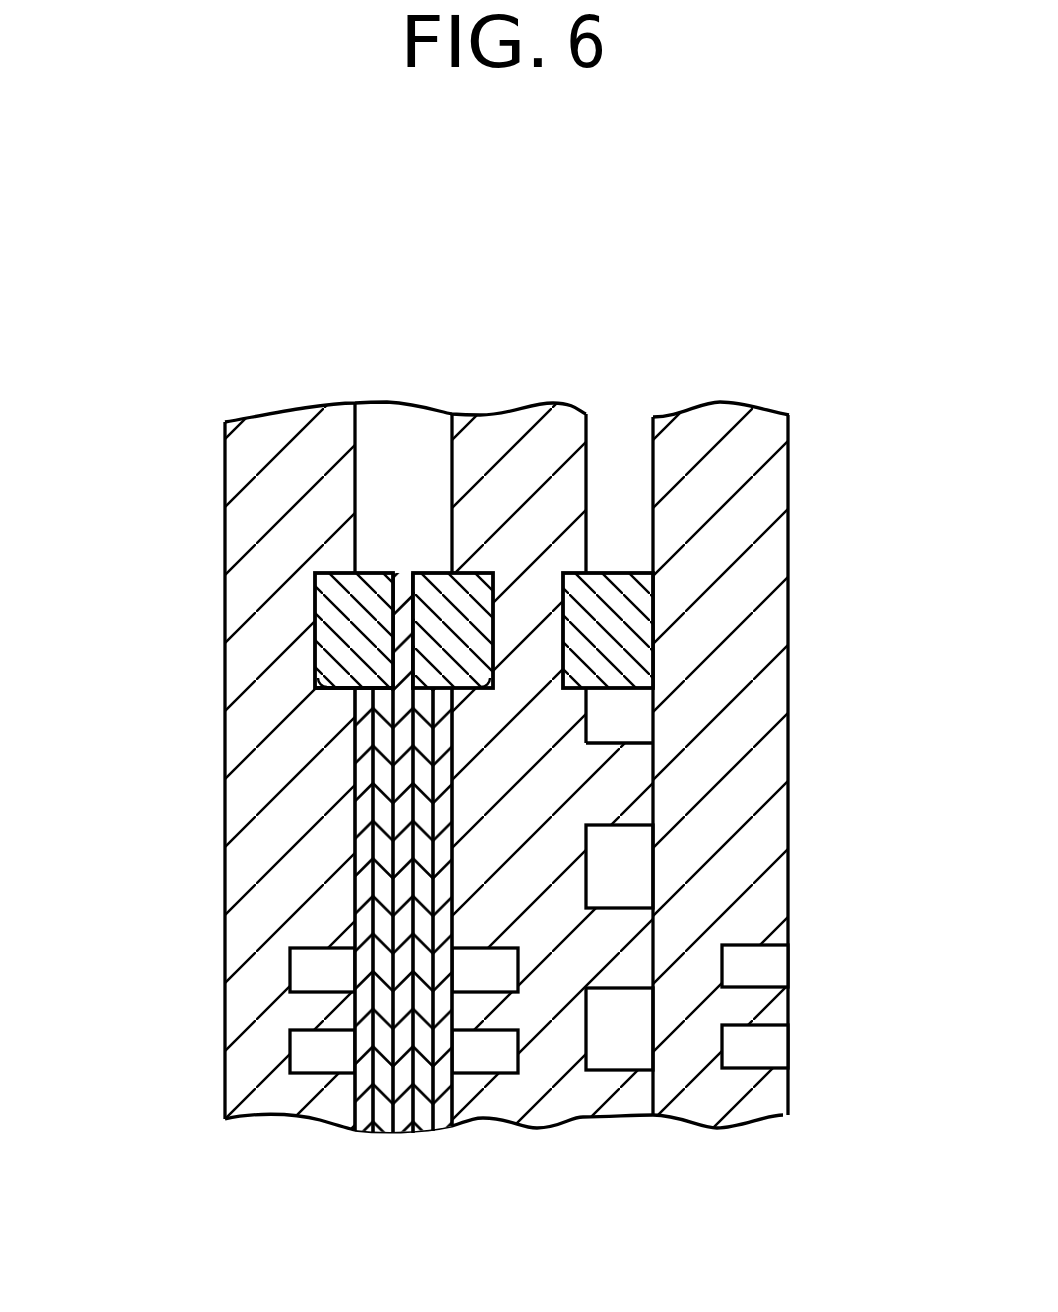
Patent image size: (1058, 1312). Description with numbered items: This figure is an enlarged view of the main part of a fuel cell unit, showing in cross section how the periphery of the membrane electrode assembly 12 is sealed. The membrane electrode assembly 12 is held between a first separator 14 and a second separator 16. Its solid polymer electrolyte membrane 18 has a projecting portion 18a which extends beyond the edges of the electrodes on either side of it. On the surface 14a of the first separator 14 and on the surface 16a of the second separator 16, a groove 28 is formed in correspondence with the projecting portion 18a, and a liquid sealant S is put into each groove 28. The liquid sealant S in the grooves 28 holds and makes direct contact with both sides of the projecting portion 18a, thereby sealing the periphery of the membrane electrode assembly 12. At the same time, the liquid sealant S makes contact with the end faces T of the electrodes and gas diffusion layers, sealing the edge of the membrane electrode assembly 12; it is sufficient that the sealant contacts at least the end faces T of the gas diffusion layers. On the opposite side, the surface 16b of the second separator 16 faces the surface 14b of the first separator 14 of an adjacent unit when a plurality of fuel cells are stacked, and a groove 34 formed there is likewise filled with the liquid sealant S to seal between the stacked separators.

The membrane electrode assembly 12 is at (269, 736).
The first separator 14 is at (277, 1088).
The surface of the first separator 14a is at (362, 470).
The surface of the first separator 14b is at (225, 957).
The second separator 16 is at (545, 1095).
The surface of the second separator 16a is at (450, 467).
The surface of the second separator 16b is at (590, 450).
The solid polymer electrolyte membrane 18 is at (407, 572).
The projecting portion 18a is at (390, 626).
The groove 28 is at (327, 692).
The groove 34 is at (612, 570).
The liquid sealant S is at (335, 587).
The end faces T is at (320, 668).